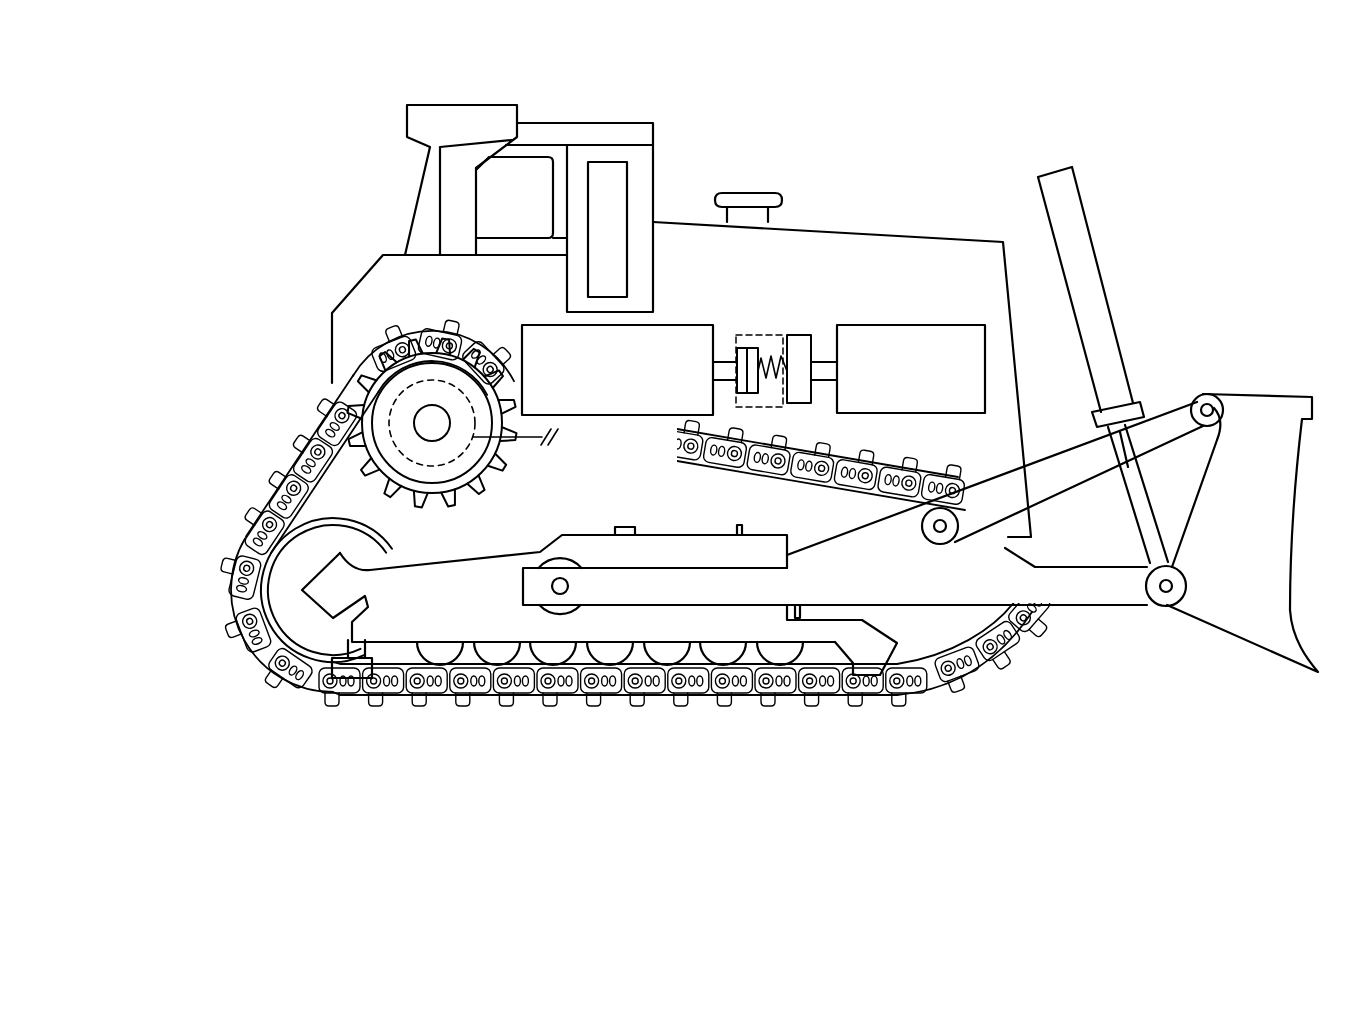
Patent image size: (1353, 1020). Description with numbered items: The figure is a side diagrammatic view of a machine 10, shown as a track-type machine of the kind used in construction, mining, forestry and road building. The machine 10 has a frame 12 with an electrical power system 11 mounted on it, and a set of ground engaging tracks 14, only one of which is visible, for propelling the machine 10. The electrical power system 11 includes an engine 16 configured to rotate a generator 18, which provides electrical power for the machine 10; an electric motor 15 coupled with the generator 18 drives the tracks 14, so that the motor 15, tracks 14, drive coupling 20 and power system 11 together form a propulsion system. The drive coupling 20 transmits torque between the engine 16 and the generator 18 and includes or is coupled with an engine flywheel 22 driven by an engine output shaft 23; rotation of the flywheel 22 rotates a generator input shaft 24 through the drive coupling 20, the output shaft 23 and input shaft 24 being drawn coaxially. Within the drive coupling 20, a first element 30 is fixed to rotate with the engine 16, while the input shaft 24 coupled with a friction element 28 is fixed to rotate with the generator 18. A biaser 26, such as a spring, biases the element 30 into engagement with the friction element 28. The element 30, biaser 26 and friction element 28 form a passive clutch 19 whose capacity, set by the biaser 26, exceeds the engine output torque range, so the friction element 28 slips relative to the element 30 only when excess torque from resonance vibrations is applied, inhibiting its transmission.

The machine 10 is at (1107, 143).
The electrical power system 11 is at (773, 322).
The frame 12 is at (400, 286).
The tracks 14 is at (248, 646).
The electric motor 15 is at (340, 430).
The engine 16 is at (968, 362).
The generator 18 is at (557, 333).
The passive clutch 19 is at (747, 347).
The drive coupling 20 is at (740, 445).
The engine flywheel 22 is at (798, 394).
The engine output shaft 23 is at (826, 368).
The generator input shaft 24 is at (722, 368).
The biaser 26 is at (772, 360).
The friction element 28 is at (737, 353).
The first element 30 is at (764, 347).